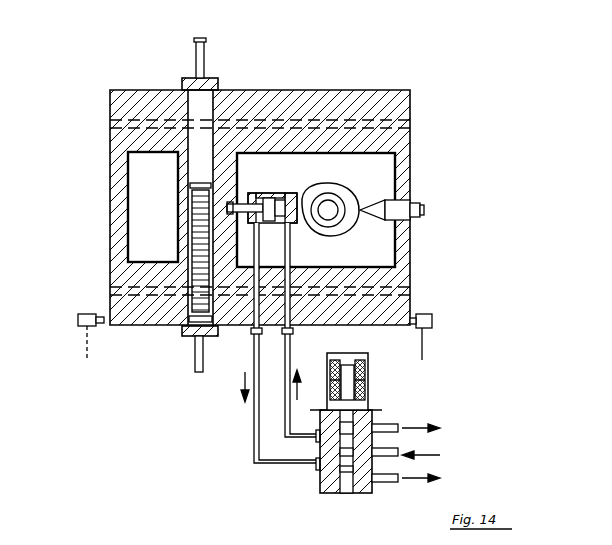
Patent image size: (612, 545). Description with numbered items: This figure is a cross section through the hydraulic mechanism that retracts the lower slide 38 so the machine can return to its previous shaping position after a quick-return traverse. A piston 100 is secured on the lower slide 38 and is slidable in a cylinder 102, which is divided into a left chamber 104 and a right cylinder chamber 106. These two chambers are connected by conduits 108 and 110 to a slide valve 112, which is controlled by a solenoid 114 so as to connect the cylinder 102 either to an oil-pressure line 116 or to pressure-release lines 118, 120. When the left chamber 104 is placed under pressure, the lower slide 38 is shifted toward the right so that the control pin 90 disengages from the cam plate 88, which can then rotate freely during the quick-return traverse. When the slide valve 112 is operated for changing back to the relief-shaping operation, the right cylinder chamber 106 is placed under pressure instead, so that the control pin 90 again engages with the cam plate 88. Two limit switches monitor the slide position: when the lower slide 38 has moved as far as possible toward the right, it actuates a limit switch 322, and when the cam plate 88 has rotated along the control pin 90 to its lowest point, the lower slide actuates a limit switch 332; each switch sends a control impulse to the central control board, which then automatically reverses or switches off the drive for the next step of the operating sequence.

The lower slide 38 is at (400, 104).
The cam plate 88 is at (350, 206).
The control pin 90 is at (395, 203).
The piston 100 is at (270, 216).
The cylinder 102 is at (271, 198).
The left chamber 104 is at (262, 200).
The right cylinder chamber 106 is at (288, 204).
The conduit 108 is at (254, 345).
The conduit 110 is at (290, 345).
The slide valve 112 is at (352, 490).
The solenoid 114 is at (362, 359).
The oil-pressure line 116 is at (374, 452).
The pressure-release line 118 is at (374, 426).
The pressure-release line 120 is at (376, 478).
The limit switch 322 is at (430, 320).
The limit switch 332 is at (80, 316).